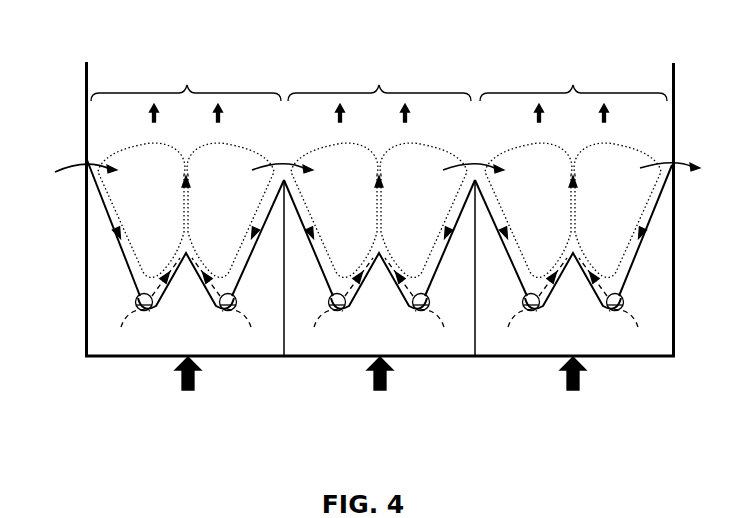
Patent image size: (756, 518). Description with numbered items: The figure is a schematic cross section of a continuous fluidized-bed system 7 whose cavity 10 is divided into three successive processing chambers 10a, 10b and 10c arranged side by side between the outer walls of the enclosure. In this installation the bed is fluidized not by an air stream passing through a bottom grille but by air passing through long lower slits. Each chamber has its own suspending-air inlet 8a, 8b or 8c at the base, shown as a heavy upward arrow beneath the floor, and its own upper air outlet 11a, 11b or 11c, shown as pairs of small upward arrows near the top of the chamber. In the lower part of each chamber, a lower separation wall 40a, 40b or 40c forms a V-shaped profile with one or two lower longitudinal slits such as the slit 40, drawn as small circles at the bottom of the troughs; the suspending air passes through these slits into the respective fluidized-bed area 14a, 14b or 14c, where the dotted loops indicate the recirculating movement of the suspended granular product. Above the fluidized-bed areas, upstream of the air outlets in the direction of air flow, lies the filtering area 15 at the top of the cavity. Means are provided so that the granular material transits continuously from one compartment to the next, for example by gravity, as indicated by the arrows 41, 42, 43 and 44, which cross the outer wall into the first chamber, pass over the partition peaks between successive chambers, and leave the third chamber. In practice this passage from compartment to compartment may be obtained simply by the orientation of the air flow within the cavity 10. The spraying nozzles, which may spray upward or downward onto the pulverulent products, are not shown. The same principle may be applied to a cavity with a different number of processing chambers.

The fluidized-bed system 7 is at (76, 72).
The cavity 10 is at (86, 118).
The first processing chamber 10a is at (186, 81).
The second processing chamber 10b is at (379, 81).
The third processing chamber 10c is at (573, 81).
The upper air outlet of first chamber 11a is at (158, 116).
The upper air outlet of second chamber 11b is at (344, 116).
The upper air outlet of third chamber 11c is at (543, 116).
The fluidized-bed area of first chamber 14a is at (148, 198).
The fluidized-bed area of second chamber 14b is at (332, 173).
The fluidized-bed area of third chamber 14c is at (522, 175).
The filtering area 15 is at (645, 122).
The lower longitudinal slit 40 is at (140, 310).
The lower separation wall of first chamber 40a is at (134, 280).
The lower separation wall of second chamber 40b is at (317, 250).
The lower separation wall of third chamber 40c is at (505, 248).
The material transit arrow 41 is at (70, 164).
The material transit arrow 42 is at (278, 163).
The material transit arrow 43 is at (469, 163).
The material transit arrow 44 is at (680, 152).
The suspending-air inlet of first chamber 8a is at (194, 382).
The suspending-air inlet of second chamber 8b is at (386, 382).
The suspending-air inlet of third chamber 8c is at (579, 382).